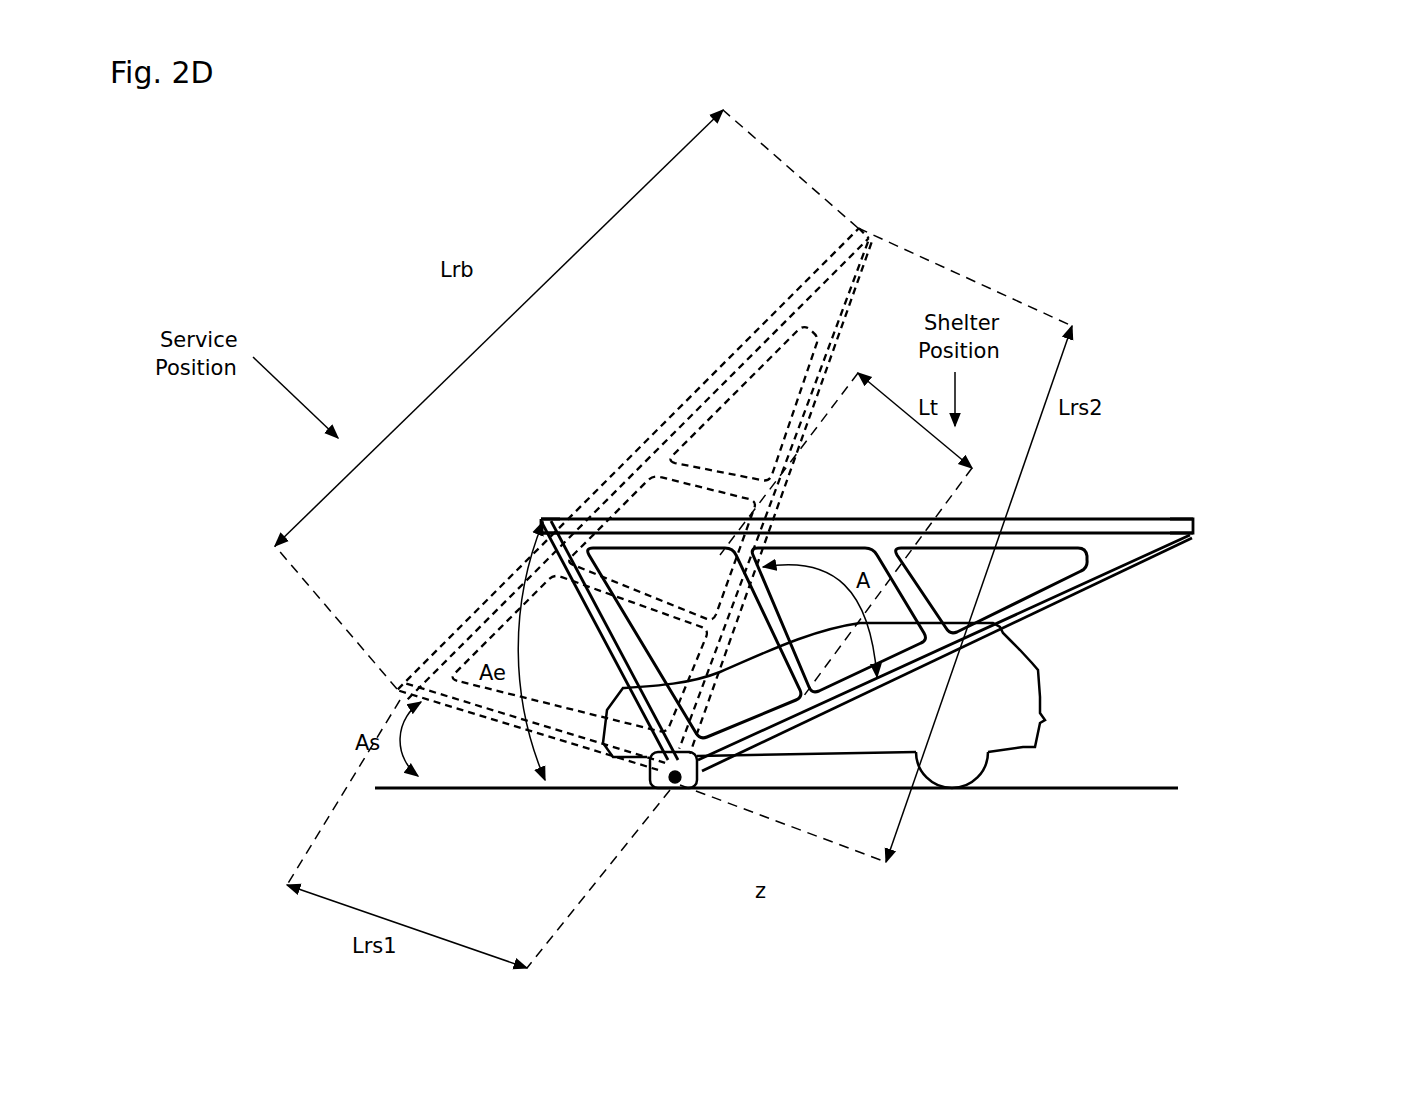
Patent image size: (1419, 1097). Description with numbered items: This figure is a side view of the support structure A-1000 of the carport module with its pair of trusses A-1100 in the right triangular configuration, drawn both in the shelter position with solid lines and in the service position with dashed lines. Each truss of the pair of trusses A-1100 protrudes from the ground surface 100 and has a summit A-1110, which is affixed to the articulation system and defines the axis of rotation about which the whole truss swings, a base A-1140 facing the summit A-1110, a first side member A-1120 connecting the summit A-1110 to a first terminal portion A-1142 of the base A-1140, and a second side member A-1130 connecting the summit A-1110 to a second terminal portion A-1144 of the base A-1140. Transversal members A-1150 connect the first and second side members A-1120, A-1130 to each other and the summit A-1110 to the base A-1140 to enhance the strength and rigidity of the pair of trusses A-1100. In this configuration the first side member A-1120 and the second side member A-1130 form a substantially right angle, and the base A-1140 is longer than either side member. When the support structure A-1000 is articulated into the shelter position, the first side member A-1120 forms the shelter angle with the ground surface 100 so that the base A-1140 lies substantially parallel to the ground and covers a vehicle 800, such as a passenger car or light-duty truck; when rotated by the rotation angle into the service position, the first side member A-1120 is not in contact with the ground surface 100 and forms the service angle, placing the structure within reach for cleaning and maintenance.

The support structure A-1000 is at (368, 356).
The pair of trusses A-1100 is at (886, 524).
The summit A-1110 is at (660, 787).
The first side member A-1120 is at (597, 637).
The second side member A-1130 is at (1100, 576).
The base A-1140 is at (998, 517).
The first terminal portion A-1142 is at (543, 516).
The second terminal portion A-1144 is at (1190, 517).
The transversal members A-1150 is at (827, 345).
The vehicles 800 is at (1017, 668).
The ground surface 100 is at (1180, 789).